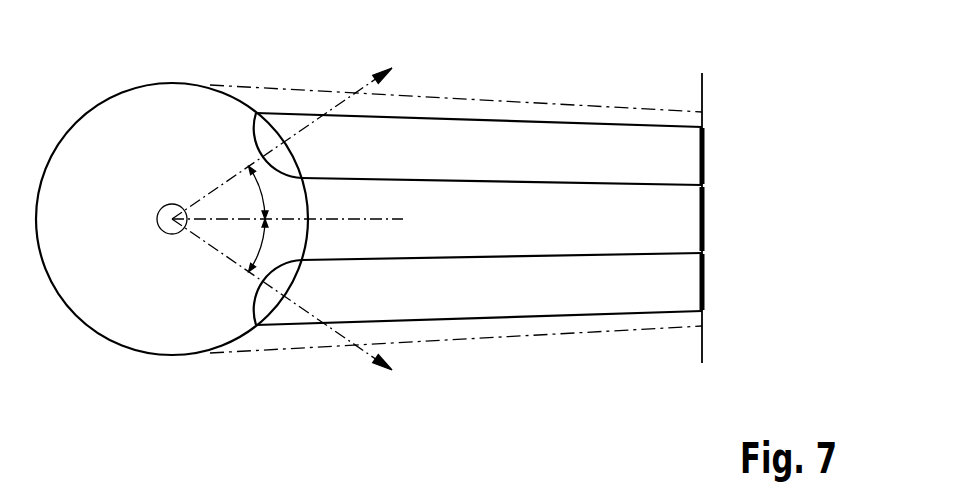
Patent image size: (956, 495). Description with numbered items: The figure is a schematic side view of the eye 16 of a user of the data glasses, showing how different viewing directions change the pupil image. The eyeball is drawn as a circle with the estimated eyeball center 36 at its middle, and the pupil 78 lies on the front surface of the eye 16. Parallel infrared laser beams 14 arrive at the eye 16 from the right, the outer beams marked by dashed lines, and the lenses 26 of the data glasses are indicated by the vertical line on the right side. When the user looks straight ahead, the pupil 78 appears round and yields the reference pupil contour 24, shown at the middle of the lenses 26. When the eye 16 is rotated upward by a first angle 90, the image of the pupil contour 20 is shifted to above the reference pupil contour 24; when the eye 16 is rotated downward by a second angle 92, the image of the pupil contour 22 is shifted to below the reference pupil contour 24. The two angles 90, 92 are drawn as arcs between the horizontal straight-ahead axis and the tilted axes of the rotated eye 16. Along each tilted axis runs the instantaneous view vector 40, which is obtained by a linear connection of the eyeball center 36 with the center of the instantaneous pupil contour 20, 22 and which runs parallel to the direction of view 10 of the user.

The eye 16 is at (156, 100).
The eyeball center 36 is at (170, 207).
The direction of view 10 is at (282, 222).
The instantaneous view vector 40 is at (358, 82).
The pupil 78 is at (266, 140).
The infrared laser beams 14 is at (562, 103).
The first angle 90 is at (256, 192).
The second angle 92 is at (256, 246).
The lenses 26 is at (700, 100).
The pupil contour 20 is at (705, 143).
The reference pupil contour 24 is at (705, 205).
The pupil contour 22 is at (705, 273).